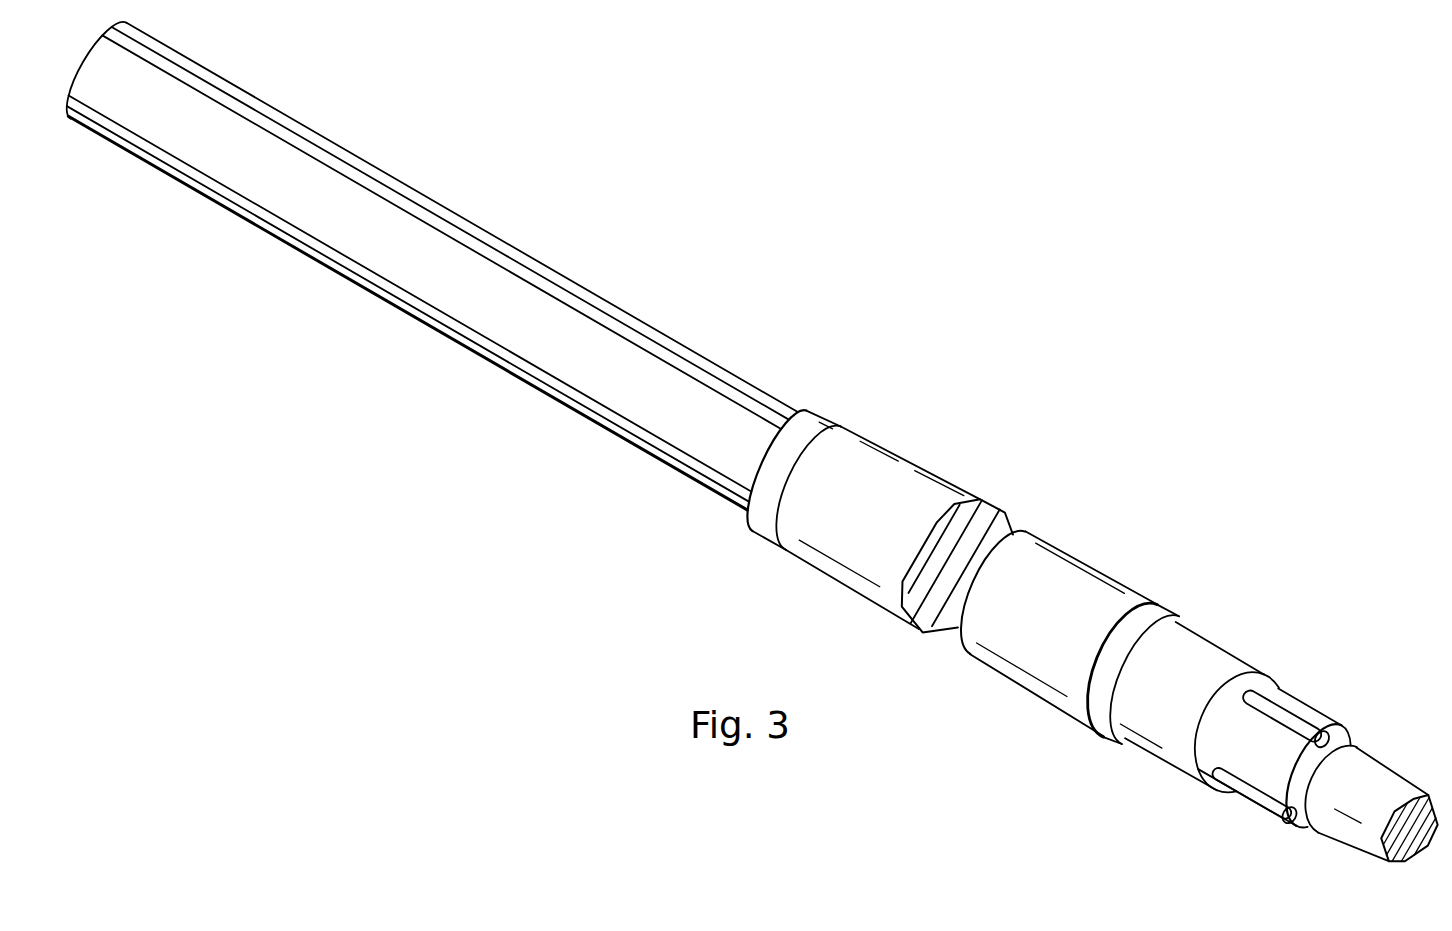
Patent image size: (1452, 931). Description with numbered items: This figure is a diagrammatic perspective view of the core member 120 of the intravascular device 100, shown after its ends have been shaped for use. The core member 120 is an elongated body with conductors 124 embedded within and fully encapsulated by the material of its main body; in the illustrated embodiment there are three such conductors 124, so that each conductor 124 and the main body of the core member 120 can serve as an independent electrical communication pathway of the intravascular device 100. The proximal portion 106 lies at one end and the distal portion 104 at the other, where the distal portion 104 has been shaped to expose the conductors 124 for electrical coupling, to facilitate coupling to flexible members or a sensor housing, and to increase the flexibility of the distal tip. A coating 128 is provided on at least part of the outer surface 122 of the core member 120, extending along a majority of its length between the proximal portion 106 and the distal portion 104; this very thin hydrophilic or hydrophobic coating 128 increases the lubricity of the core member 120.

The intravascular device 100 is at (946, 157).
The distal portion 104 is at (1256, 819).
The proximal portion 106 is at (381, 366).
The core member 120 is at (808, 420).
The outer surface 122 is at (1130, 624).
The conductors 124 is at (403, 203).
The coating 128 is at (905, 463).